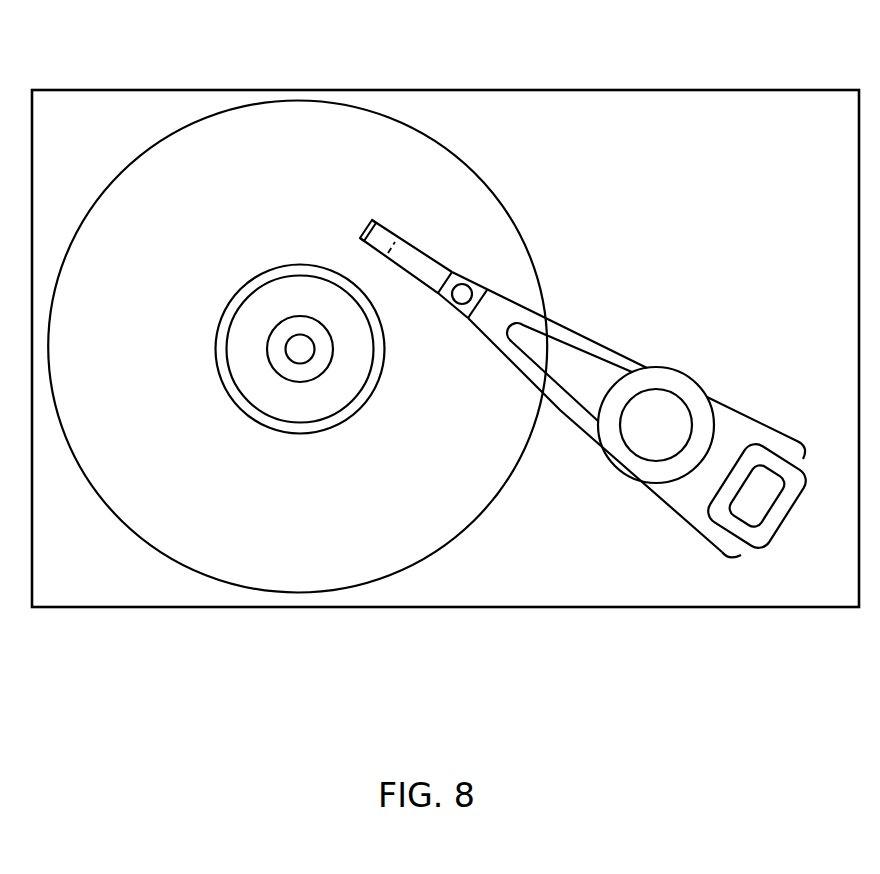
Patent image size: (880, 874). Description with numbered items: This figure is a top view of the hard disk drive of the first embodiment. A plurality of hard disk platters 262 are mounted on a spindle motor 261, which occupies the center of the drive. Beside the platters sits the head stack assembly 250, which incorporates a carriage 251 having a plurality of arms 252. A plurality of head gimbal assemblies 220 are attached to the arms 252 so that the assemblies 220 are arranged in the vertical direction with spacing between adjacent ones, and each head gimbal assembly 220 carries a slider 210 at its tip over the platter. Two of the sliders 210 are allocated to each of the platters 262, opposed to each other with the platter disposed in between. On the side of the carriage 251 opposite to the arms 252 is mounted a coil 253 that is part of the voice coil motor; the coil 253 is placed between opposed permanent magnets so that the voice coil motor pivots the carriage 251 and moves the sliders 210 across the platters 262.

The slider 210 is at (386, 221).
The head gimbal assembly 220 is at (427, 291).
The head stack assembly 250 is at (660, 503).
The carriage 251 is at (666, 368).
The arm 252 is at (573, 423).
The coil 253 is at (784, 518).
The spindle motor 261 is at (300, 363).
The hard disk platter 262 is at (210, 579).